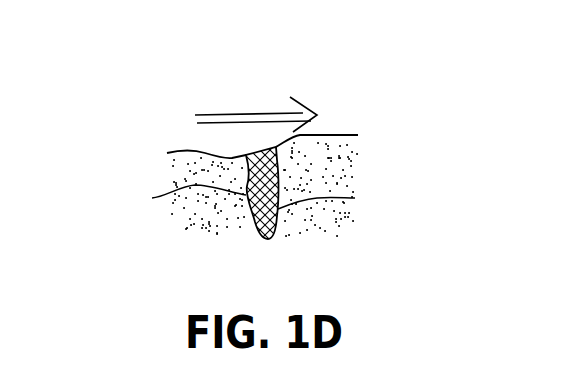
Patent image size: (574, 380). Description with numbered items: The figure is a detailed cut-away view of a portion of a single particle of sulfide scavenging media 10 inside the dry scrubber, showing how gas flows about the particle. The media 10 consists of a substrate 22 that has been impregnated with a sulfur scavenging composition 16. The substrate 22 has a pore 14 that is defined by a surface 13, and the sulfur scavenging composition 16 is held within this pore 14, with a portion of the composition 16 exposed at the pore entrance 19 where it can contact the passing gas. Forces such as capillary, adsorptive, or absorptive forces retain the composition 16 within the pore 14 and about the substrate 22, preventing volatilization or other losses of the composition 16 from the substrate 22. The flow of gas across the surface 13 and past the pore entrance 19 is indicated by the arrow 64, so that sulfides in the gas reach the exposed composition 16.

The sulfide scavenging media 10 is at (439, 94).
The surface 13 is at (185, 150).
The pore 14 is at (355, 198).
The sulfur scavenging composition 16 is at (152, 198).
The pore entrance 19 is at (260, 146).
The substrate 22 is at (329, 150).
The flow direction arrow 64 is at (242, 111).